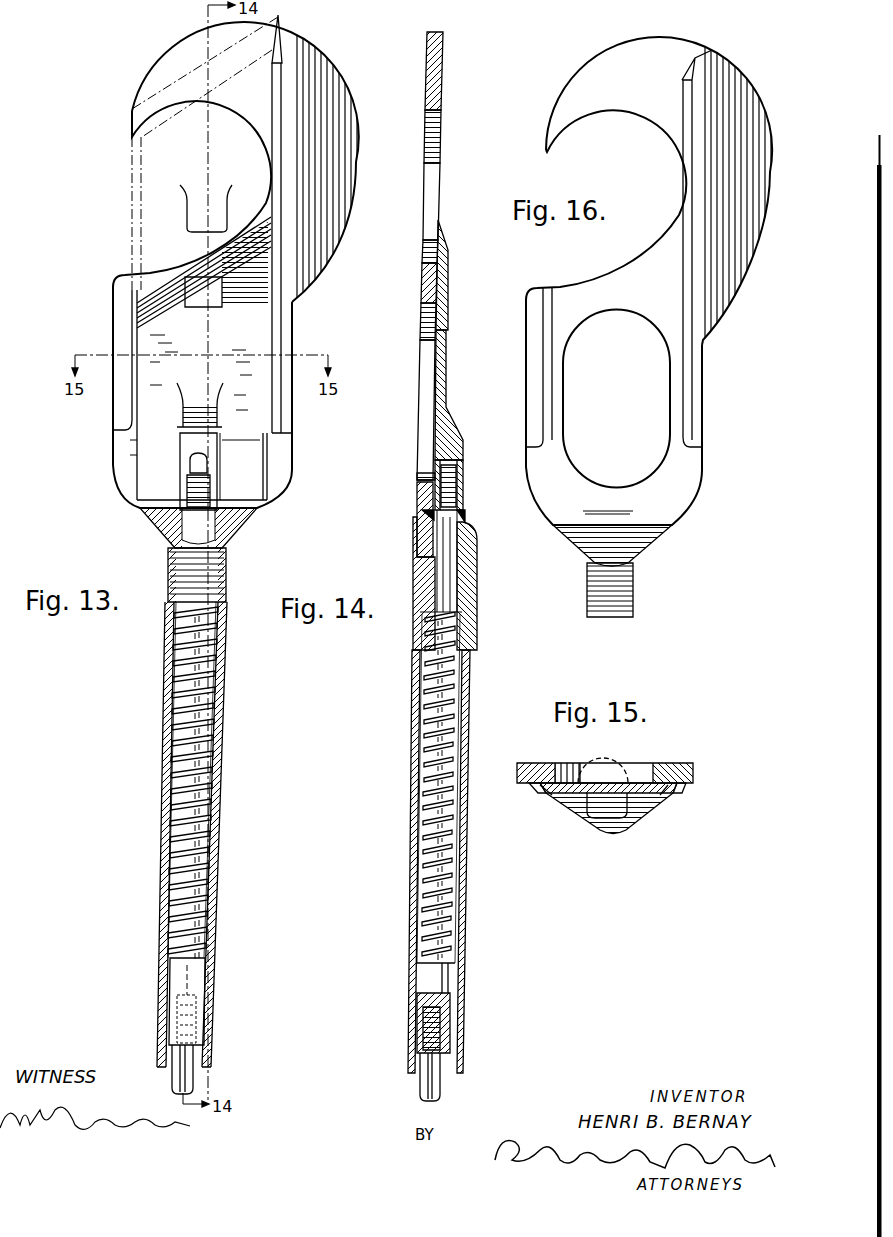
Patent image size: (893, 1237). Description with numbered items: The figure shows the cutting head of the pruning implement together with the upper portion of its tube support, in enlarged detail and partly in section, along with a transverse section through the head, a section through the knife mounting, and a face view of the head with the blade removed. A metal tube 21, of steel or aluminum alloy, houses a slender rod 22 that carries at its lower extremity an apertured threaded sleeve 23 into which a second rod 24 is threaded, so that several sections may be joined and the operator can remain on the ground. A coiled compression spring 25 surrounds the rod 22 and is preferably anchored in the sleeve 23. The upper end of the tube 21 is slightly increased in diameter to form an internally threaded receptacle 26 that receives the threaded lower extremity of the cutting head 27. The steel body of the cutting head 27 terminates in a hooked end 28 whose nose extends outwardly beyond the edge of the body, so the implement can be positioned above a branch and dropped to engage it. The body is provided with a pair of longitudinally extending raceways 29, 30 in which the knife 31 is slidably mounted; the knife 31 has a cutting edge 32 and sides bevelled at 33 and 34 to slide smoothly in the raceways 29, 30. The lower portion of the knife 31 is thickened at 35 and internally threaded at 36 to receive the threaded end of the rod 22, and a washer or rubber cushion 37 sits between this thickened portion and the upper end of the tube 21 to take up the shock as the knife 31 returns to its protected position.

In FIG. 13, the metal tube 21 is at (215, 858).
In FIG. 14, the metal tube 21 is at (461, 867).
In FIG. 13, the rod 22 is at (187, 793).
In FIG. 14, the rod 22 is at (432, 692).
In FIG. 13, the apertured threaded sleeve 23 is at (197, 983).
In FIG. 14, the apertured threaded sleeve 23 is at (455, 975).
In FIG. 13, the second rod 24 is at (197, 1055).
In FIG. 14, the second rod 24 is at (438, 1067).
In FIG. 13, the coiled compression spring 25 is at (213, 753).
In FIG. 14, the coiled compression spring 25 is at (463, 712).
In FIG. 13, the receptacle 26 is at (227, 568).
In FIG. 14, the receptacle 26 is at (477, 570).
In FIG. 13, the cutting head 27 is at (282, 453).
In FIG. 14, the cutting head 27 is at (423, 498).
In FIG. 16, the cutting head 27 is at (690, 483).
In FIG. 15, the cutting head 27 is at (693, 770).
In FIG. 13, the hooked end 28 is at (348, 120).
In FIG. 14, the hooked end 28 is at (445, 94).
In FIG. 16, the hooked end 28 is at (752, 148).
In FIG. 13, the raceway 29 is at (132, 328).
In FIG. 16, the raceway 29 is at (543, 360).
In FIG. 15, the raceway 29 is at (535, 787).
In FIG. 13, the raceway 30 is at (281, 323).
In FIG. 16, the raceway 30 is at (690, 370).
In FIG. 15, the raceway 30 is at (686, 789).
In FIG. 13, the knife 31 is at (250, 482).
In FIG. 14, the knife 31 is at (445, 350).
In FIG. 15, the knife 31 is at (565, 791).
In FIG. 13, the cutting edge 32 is at (195, 265).
In FIG. 14, the cutting edge 32 is at (444, 237).
In FIG. 13, the bevelled side 33 is at (130, 455).
In FIG. 15, the bevelled side 33 is at (546, 791).
In FIG. 13, the bevelled side 34 is at (267, 465).
In FIG. 15, the bevelled side 34 is at (673, 794).
In FIG. 13, the thickened lower portion 35 is at (185, 452).
In FIG. 14, the thickened lower portion 35 is at (463, 457).
In FIG. 15, the thickened lower portion 35 is at (624, 808).
In FIG. 13, the internal thread 36 is at (183, 487).
In FIG. 14, the internal thread 36 is at (457, 487).
In FIG. 13, the rubber cushion 37 is at (240, 517).
In FIG. 14, the rubber cushion 37 is at (461, 511).